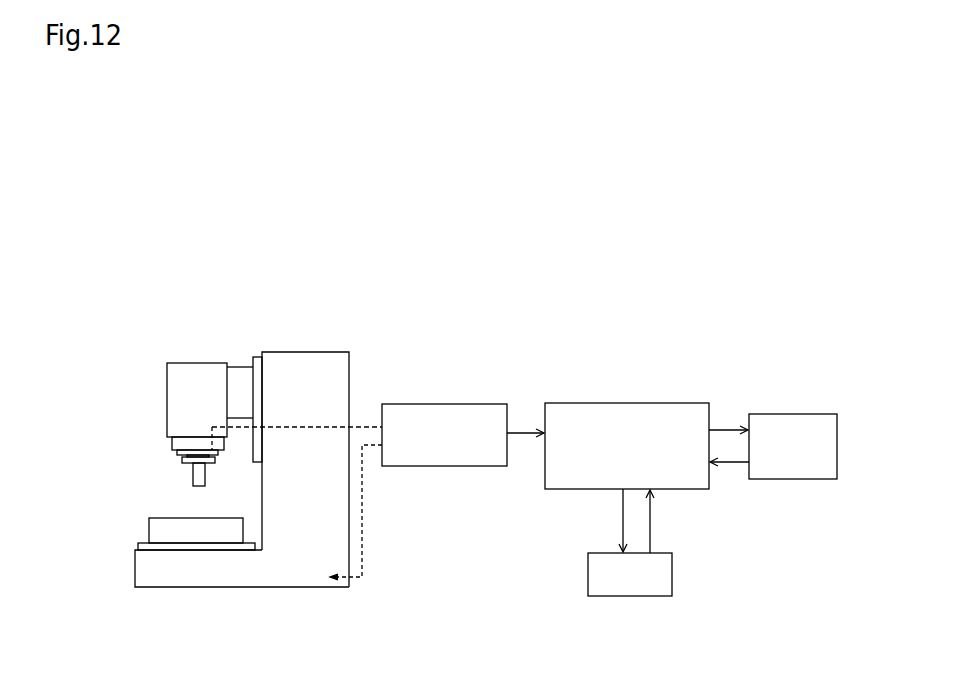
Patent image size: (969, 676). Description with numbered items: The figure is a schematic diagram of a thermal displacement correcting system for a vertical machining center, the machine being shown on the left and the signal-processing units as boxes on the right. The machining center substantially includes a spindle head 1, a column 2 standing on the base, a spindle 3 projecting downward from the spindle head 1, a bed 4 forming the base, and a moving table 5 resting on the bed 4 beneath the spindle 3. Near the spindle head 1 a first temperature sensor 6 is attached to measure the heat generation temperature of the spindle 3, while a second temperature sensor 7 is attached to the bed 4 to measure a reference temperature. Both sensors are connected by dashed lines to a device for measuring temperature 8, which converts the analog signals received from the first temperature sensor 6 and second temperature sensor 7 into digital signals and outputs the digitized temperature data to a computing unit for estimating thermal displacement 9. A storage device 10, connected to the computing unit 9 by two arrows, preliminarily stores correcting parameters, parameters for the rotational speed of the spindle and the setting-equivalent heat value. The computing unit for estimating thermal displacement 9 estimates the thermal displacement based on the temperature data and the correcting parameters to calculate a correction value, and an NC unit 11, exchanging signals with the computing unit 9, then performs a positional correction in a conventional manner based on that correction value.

The spindle head 1 is at (212, 365).
The column 2 is at (306, 358).
The spindle 3 is at (170, 448).
The bed 4 is at (330, 537).
The moving table 5 is at (196, 535).
The first temperature sensor 6 is at (212, 452).
The second temperature sensor 7 is at (349, 583).
The device for measuring temperature 8 is at (463, 425).
The computing unit for estimating thermal displacement 9 is at (646, 466).
The storage device 10 is at (630, 543).
The NC unit 11 is at (773, 435).